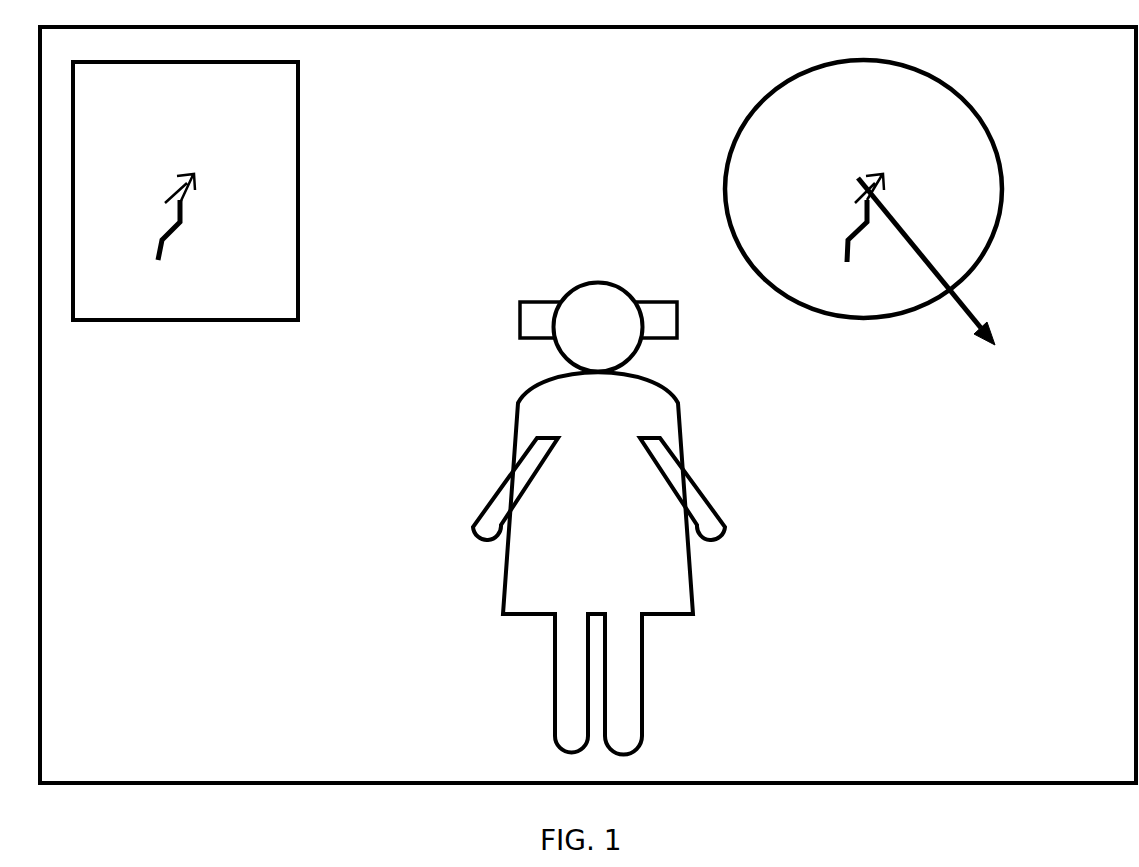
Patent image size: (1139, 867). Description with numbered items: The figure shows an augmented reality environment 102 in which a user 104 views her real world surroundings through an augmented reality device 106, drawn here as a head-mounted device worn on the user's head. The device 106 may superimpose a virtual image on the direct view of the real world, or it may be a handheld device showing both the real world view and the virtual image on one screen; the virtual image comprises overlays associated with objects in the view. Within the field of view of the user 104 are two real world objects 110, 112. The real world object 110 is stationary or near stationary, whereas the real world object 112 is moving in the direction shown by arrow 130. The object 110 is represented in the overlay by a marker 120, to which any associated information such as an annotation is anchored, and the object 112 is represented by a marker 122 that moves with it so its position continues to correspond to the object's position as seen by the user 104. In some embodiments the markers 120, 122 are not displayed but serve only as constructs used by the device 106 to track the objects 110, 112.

The augmented reality environment 102 is at (122, 767).
The user 104 is at (668, 519).
The augmented reality device 106 is at (532, 328).
The real world object 110 is at (244, 191).
The real world object 112 is at (923, 189).
The marker 120 is at (161, 238).
The marker 122 is at (849, 238).
The arrow 130 is at (972, 261).